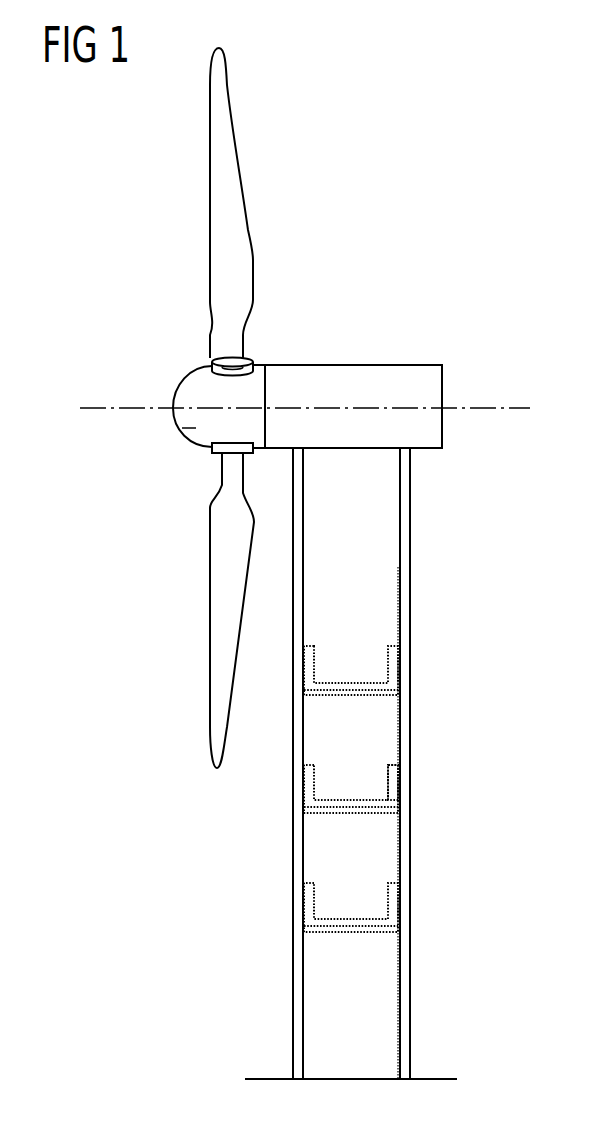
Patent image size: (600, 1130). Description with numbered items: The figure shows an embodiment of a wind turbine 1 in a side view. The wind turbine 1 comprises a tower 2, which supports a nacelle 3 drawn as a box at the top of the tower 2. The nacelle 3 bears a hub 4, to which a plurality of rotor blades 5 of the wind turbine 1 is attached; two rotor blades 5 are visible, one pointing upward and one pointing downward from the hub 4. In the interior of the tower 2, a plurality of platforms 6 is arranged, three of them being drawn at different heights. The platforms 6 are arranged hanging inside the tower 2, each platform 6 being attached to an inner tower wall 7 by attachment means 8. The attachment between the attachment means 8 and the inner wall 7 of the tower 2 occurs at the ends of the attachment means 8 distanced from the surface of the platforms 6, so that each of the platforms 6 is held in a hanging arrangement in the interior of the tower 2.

The wind turbine 1 is at (520, 327).
The tower 2 is at (404, 528).
The nacelle 3 is at (383, 385).
The hub 4 is at (193, 428).
The rotor blades 5 is at (228, 578).
The platforms 6 is at (390, 688).
The inner tower wall 7 is at (399, 580).
The attachment means 8 is at (392, 780).